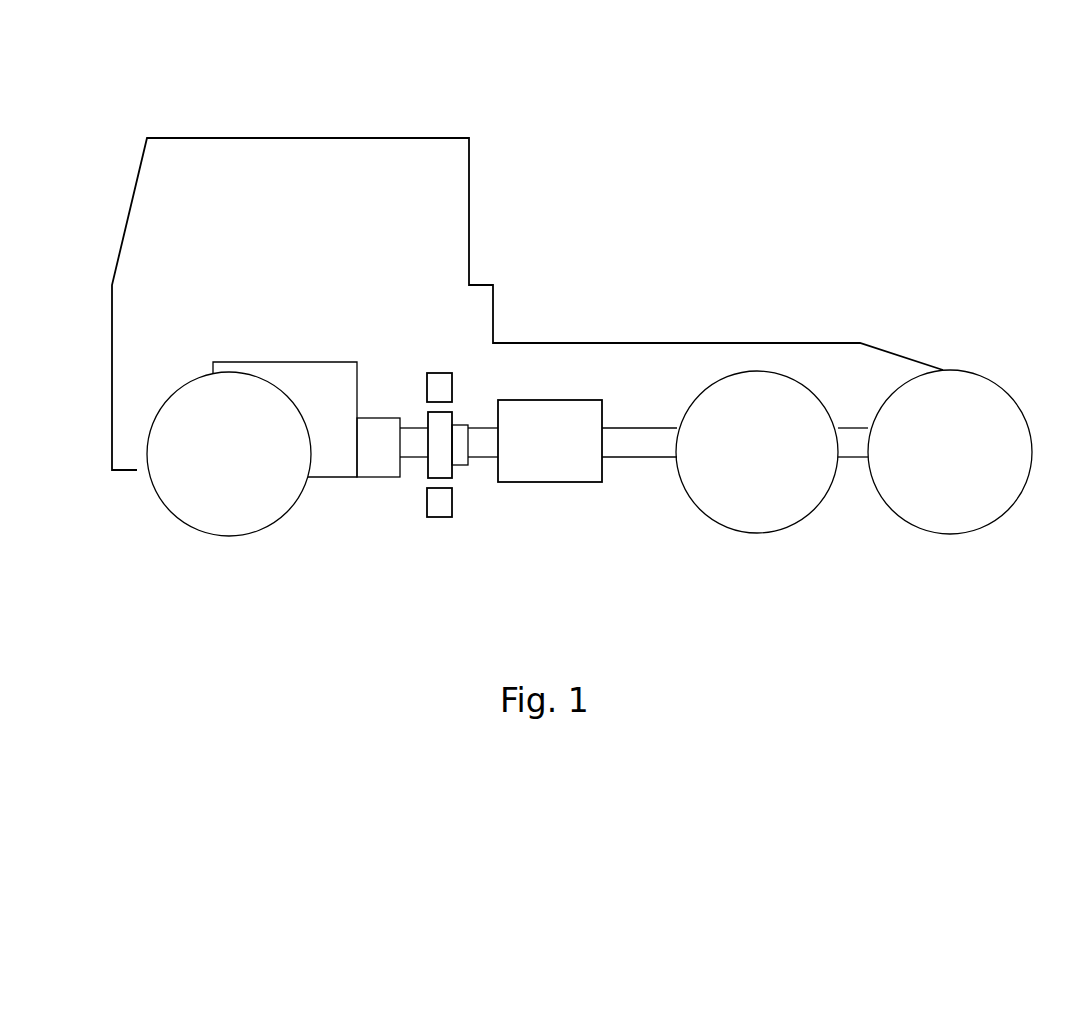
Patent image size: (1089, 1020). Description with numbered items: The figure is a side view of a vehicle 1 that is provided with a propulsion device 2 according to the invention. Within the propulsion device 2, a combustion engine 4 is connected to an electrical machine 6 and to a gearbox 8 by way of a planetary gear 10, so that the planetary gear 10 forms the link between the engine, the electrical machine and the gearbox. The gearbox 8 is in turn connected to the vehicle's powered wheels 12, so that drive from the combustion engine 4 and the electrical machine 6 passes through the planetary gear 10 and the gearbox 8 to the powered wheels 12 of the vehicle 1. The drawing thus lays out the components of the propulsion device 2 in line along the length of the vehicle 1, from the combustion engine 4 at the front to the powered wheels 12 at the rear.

The vehicle 1 is at (578, 117).
The propulsion device 2 is at (492, 376).
The combustion engine 4 is at (253, 362).
The electrical machine 6 is at (452, 502).
The gearbox 8 is at (577, 482).
The planetary gear 10 is at (405, 356).
The powered wheels 12 is at (803, 520).